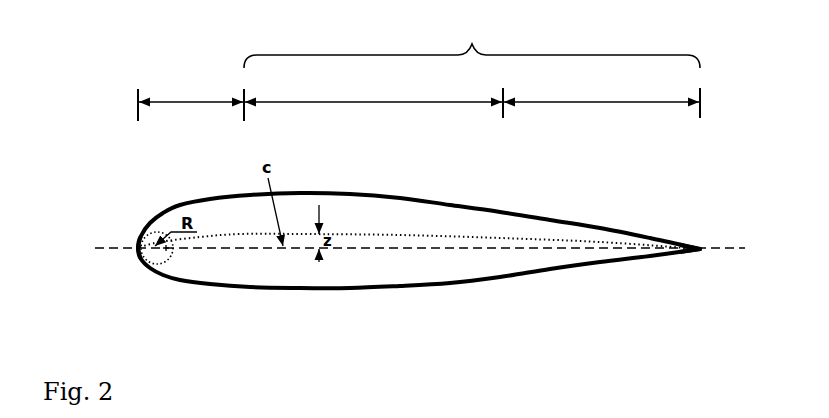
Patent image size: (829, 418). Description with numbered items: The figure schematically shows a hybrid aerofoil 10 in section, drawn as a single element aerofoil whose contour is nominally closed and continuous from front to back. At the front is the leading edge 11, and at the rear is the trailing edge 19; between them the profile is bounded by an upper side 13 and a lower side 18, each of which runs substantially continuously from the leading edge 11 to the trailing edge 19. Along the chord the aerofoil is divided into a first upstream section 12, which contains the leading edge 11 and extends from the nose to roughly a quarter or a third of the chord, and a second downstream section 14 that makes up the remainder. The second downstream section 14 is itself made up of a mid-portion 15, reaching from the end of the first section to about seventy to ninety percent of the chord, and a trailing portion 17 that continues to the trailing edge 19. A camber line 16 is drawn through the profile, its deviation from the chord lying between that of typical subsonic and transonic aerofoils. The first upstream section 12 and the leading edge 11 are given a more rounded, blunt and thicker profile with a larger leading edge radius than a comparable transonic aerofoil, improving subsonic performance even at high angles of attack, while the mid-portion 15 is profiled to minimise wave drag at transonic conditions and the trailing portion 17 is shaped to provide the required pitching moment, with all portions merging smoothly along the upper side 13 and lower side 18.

The hybrid aerofoil 10 is at (423, 230).
The leading edge 11 is at (137, 245).
The first upstream section 12 is at (191, 90).
The upper side 13 is at (451, 203).
The second downstream section 14 is at (472, 46).
The mid-portion 15 is at (373, 90).
The camber line 16 is at (234, 234).
The trailing portion 17 is at (601, 90).
The lower side 18 is at (450, 284).
The trailing edge 19 is at (703, 246).